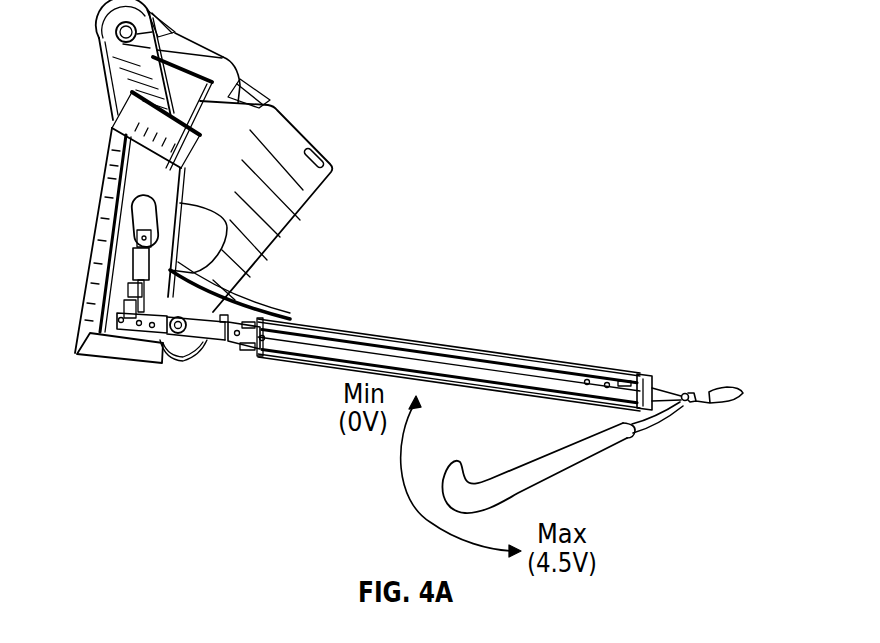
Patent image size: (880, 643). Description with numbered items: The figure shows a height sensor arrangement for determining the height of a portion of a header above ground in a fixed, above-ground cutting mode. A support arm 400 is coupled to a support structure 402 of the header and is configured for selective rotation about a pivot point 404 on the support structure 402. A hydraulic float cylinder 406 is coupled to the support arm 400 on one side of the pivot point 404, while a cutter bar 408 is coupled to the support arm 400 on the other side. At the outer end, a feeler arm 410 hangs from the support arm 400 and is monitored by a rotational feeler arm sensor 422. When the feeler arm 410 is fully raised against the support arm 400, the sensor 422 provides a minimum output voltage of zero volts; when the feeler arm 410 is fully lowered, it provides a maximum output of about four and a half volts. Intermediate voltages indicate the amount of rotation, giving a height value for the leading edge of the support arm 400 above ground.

The support arm 400 is at (543, 357).
The support structure 402 is at (110, 178).
The pivot point 404 is at (158, 362).
The hydraulic float cylinder 406 is at (130, 270).
The cutter bar 408 is at (730, 390).
The feeler arm 410 is at (552, 480).
The rotational feeler arm sensor 422 is at (681, 393).